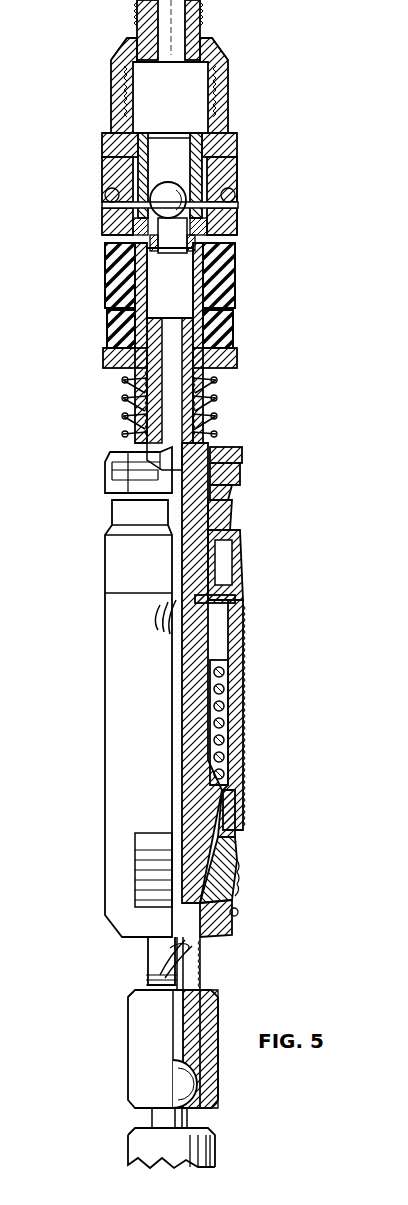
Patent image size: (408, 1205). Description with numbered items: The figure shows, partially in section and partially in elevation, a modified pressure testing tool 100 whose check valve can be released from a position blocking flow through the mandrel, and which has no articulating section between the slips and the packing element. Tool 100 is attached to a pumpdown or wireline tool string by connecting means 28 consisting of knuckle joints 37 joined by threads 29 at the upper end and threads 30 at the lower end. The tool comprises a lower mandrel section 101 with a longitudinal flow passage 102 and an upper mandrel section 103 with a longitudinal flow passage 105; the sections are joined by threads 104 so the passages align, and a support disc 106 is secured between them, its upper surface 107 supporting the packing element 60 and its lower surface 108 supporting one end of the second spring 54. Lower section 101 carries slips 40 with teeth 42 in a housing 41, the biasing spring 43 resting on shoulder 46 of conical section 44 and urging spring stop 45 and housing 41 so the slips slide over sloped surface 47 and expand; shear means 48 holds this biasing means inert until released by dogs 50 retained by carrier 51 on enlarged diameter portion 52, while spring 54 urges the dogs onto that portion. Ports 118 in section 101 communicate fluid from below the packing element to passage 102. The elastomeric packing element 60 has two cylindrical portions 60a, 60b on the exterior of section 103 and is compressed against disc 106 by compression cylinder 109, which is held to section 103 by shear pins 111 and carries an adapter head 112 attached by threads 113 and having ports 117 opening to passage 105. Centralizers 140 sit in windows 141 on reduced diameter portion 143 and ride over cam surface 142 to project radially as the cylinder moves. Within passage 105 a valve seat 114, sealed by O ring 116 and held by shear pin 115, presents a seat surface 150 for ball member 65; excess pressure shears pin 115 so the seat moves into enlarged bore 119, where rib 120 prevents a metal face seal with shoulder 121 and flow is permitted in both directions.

The connecting means 28 is at (223, 1108).
The threads 29 is at (205, 6).
The threads 30 is at (203, 990).
The knuckle joint 37 is at (140, 1035).
The slips 40 is at (237, 855).
The housing 41 is at (243, 757).
The teeth 42 is at (240, 877).
The spring 43 is at (222, 708).
The conical section 44 is at (235, 805).
The spring stop 45 is at (208, 620).
The shoulder 46 is at (228, 780).
The sloped surface 47 is at (240, 826).
The shear means 48 is at (222, 598).
The dog means 50 is at (240, 478).
The carrier 51 is at (232, 495).
The enlarged diameter portion 52 is at (243, 455).
The second spring 54 is at (216, 405).
The packing element 60 is at (228, 300).
The cylindrical portion 60a is at (237, 250).
The cylindrical portion 60b is at (235, 337).
The ball member 65 is at (168, 190).
The modified pressure testing tool 100 is at (268, 62).
The lower mandrel section 101 is at (205, 672).
The longitudinal flow passage 102 is at (110, 462).
The upper mandrel section 103 is at (107, 322).
The threads 104 is at (125, 394).
The longitudinal flow passage 105 is at (237, 148).
The support disc 106 is at (237, 365).
The upper surface 107 is at (108, 345).
The lower surface 108 is at (105, 367).
The compression cylinder 109 is at (237, 172).
The shear pin 111 is at (105, 203).
The adapter head 112 is at (110, 68).
The threads 113 is at (227, 92).
The valve seat 114 is at (123, 262).
The shear pin 115 is at (145, 240).
The O ring 116 is at (195, 298).
The ports 117 is at (127, 40).
The ports 118 is at (197, 950).
The enlarged bore 119 is at (227, 284).
The rib 120 is at (170, 254).
The shoulder 121 is at (233, 328).
The centralizer 140 is at (104, 147).
The windows 141 is at (240, 132).
The cam surface 142 is at (103, 165).
The reduced diameter portion 143 is at (103, 130).
The seat surface 150 is at (111, 224).